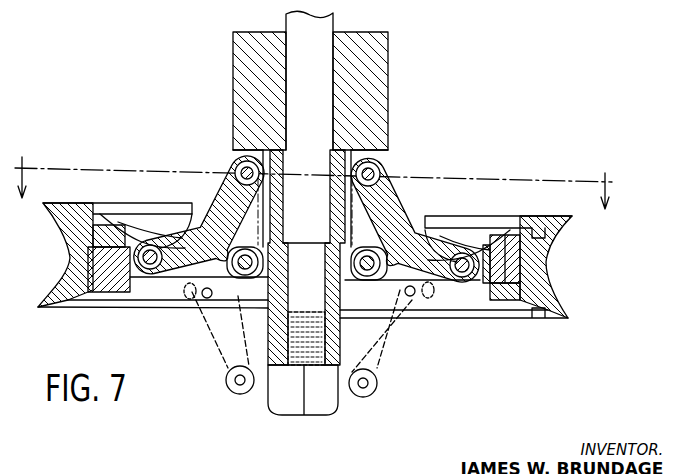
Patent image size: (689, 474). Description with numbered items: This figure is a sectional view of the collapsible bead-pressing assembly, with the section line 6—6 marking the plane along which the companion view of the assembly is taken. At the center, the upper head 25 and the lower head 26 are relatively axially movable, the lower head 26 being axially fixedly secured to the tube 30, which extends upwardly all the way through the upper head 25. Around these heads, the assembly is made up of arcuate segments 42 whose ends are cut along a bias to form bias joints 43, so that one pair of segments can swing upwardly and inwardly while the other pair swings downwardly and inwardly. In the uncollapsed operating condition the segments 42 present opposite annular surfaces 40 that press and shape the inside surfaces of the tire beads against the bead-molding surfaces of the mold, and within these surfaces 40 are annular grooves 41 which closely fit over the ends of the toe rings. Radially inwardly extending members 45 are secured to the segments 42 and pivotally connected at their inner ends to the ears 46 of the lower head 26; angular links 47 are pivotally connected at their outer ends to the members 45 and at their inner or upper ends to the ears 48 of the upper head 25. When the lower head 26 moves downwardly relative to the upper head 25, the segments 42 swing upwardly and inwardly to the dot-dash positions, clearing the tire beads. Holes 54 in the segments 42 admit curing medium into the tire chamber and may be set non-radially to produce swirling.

The section line 6— 6 is at (316, 164).
The upper head 25 is at (386, 138).
The lower head 26 is at (340, 343).
The tube 30 is at (299, 132).
The annular surfaces 40 is at (553, 217).
The annular grooves 41 is at (538, 232).
The arcuate segments 42 is at (197, 200).
The bias joints 43 is at (160, 225).
The radially inwardly extending members 45 is at (124, 300).
The ears of the lower head 46 is at (347, 265).
The angular links 47 is at (224, 181).
The ears of the upper head 48 is at (234, 154).
The holes 54 is at (190, 294).